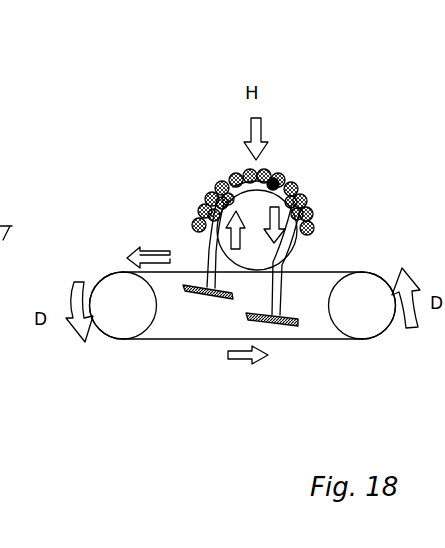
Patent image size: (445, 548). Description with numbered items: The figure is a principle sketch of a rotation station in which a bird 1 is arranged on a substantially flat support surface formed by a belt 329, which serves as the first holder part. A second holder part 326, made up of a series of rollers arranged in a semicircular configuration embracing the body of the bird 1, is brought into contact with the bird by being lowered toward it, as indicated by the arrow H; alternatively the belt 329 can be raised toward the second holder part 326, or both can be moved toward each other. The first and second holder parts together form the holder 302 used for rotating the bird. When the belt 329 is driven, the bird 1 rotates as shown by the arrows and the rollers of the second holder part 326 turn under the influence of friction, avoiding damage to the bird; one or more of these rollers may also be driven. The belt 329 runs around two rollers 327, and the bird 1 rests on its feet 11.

The bird 1 is at (271, 171).
The foot 11 is at (212, 299).
The holder 302 is at (333, 190).
The second holder part 326 is at (216, 188).
The roller 327 is at (156, 332).
The belt 329 is at (303, 271).